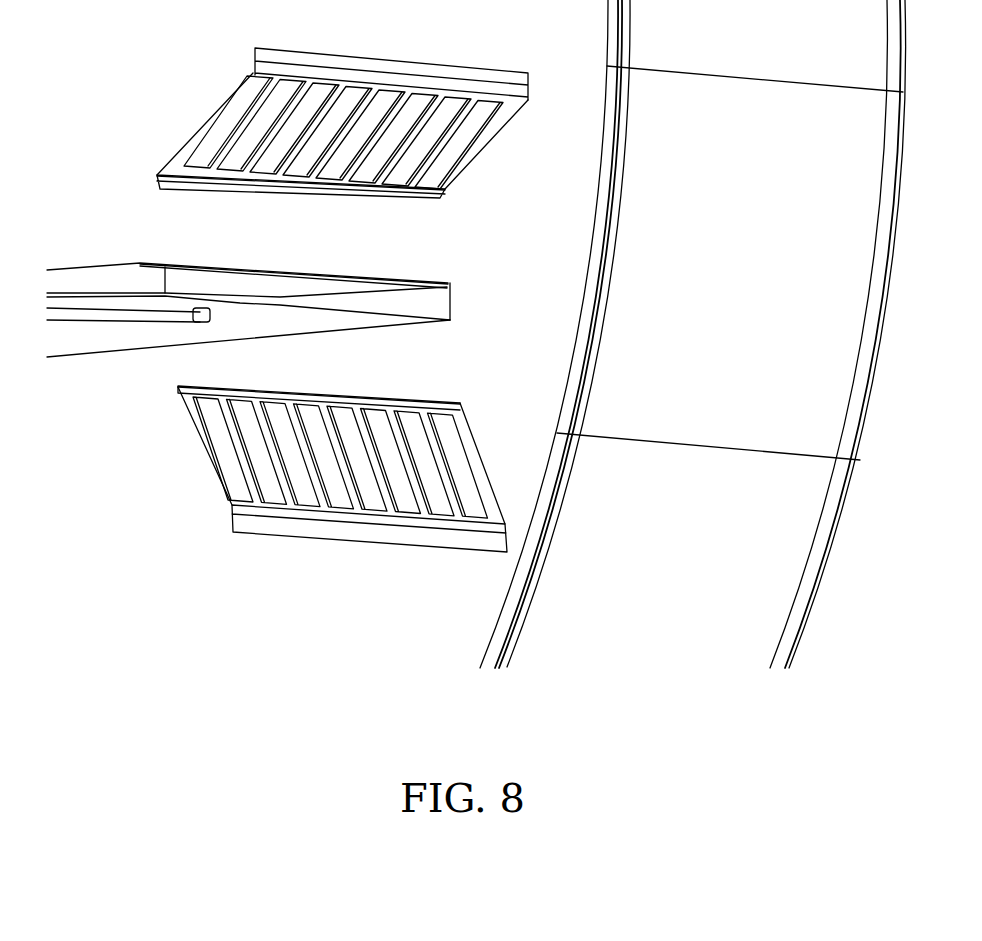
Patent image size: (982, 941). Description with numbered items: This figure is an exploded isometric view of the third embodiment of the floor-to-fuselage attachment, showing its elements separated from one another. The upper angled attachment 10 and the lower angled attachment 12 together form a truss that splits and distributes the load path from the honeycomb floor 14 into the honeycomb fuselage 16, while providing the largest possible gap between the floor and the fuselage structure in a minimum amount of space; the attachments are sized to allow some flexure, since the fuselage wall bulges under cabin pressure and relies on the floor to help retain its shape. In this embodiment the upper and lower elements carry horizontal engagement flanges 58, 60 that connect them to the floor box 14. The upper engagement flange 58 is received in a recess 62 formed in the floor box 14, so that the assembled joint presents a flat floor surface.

The upper angled attachment 10 is at (190, 140).
The lower angled attachment 12 is at (203, 442).
The honeycomb floor 14 is at (415, 308).
The honeycomb fuselage 16 is at (672, 387).
The horizontal engagement flange 58 is at (152, 177).
The horizontal engagement flange 60 is at (187, 385).
The recess 62 is at (240, 267).